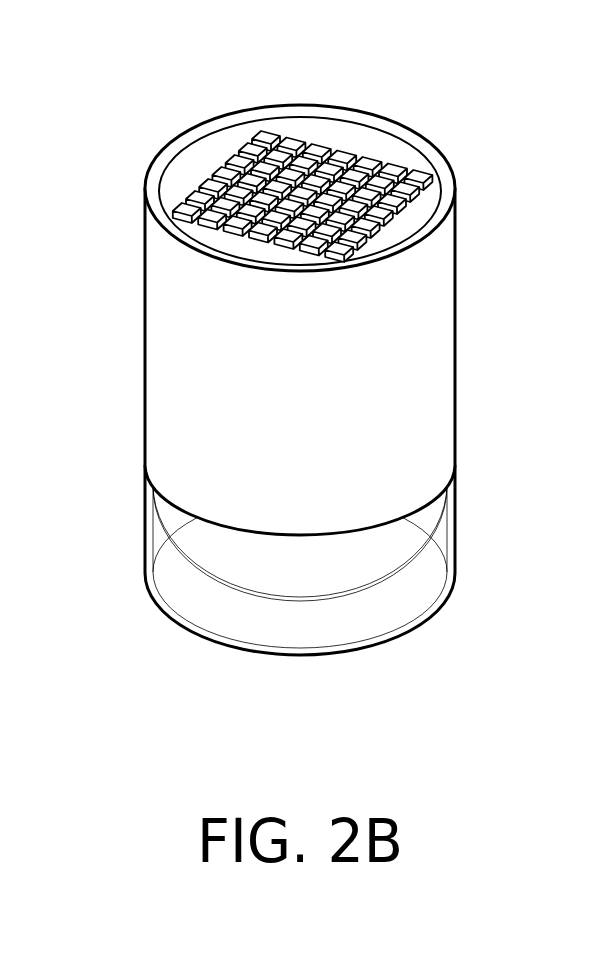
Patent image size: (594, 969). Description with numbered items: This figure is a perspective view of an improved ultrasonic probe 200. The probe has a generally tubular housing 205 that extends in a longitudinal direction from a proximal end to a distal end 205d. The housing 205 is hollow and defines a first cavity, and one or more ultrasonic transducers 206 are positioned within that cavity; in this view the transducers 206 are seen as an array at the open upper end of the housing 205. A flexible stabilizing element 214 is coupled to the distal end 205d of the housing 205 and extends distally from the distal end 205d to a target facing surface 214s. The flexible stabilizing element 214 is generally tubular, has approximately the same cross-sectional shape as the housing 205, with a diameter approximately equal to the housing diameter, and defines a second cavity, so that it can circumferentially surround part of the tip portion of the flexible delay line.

The ultrasonic probe 200 is at (328, 384).
The housing 205 is at (322, 397).
The distal end 205d is at (432, 488).
The ultrasonic transducers 206 is at (237, 170).
The flexible stabilizing element 214 is at (318, 634).
The target facing surface 214s is at (374, 640).